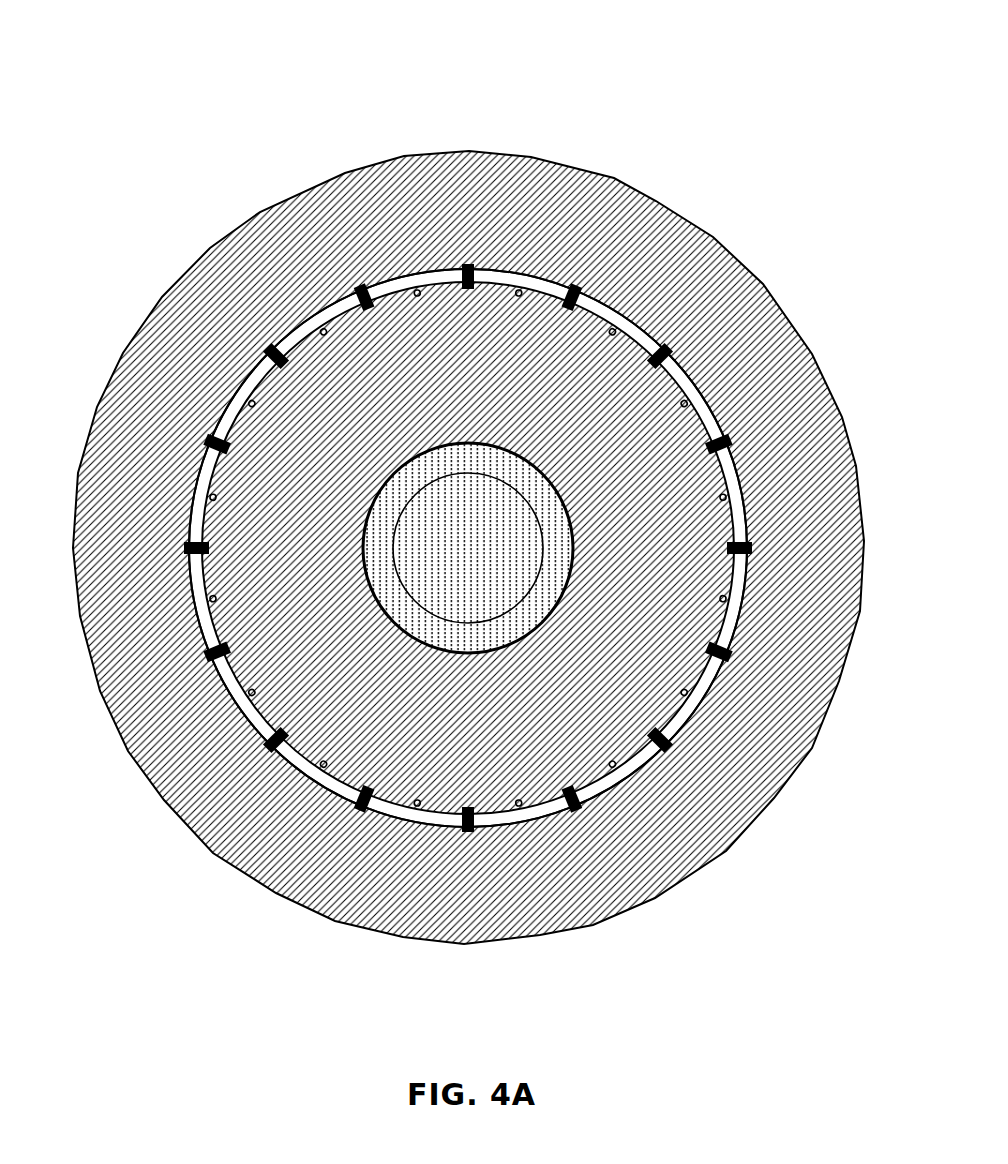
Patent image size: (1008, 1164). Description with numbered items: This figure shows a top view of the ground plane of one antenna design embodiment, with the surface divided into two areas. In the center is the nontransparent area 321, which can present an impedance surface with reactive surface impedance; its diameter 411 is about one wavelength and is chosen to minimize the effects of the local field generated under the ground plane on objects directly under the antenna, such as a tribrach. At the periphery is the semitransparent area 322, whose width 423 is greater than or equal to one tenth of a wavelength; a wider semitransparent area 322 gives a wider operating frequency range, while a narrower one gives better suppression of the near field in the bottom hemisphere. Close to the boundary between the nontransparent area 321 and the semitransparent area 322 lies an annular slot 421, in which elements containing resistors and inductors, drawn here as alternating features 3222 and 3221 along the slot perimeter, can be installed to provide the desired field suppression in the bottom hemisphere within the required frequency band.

The nontransparent area 321 is at (297, 407).
The annular slot 421 is at (400, 285).
The semitransparent area 322 is at (748, 137).
The connecting blocks 3222 is at (632, 332).
The connecting points 3221 is at (748, 342).
The diameter of the nontransparent area 411 is at (732, 548).
The width of the semitransparent area 423 is at (862, 548).